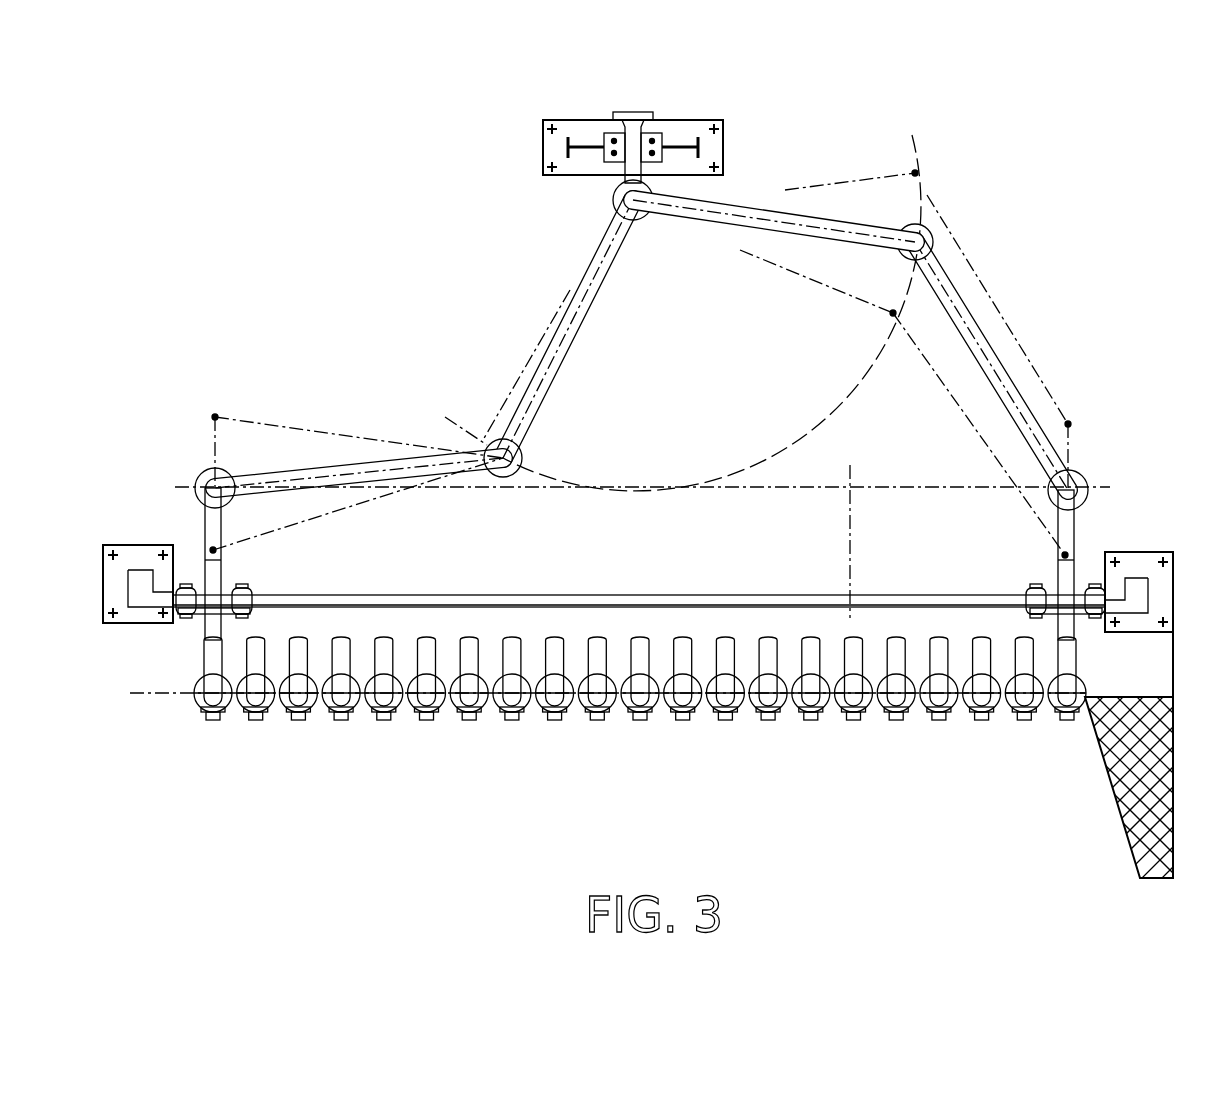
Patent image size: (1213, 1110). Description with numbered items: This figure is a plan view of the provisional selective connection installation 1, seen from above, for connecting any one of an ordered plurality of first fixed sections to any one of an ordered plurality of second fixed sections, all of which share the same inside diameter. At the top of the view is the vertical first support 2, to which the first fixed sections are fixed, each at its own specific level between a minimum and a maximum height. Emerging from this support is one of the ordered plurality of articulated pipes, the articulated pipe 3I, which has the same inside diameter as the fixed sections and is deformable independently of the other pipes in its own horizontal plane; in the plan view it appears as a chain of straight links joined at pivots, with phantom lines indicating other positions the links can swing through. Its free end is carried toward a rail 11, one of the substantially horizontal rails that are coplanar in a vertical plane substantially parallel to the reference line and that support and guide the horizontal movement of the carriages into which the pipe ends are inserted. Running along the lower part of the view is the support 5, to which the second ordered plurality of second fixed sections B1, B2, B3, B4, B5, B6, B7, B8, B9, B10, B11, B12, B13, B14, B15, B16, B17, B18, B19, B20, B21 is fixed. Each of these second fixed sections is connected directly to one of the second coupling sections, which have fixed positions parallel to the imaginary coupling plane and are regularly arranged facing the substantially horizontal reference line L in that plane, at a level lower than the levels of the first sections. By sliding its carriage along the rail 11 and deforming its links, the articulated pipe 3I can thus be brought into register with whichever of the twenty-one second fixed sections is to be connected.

The bale handling apparatus 1 is at (848, 114).
The vertical first support 2 is at (663, 150).
The articulated pipe 3I is at (764, 212).
The rail 11 is at (606, 594).
The support 5 is at (1160, 668).
The reference line L is at (138, 694).
The second fixed section B1 is at (213, 417).
The second fixed section B2 is at (256, 618).
The second fixed section B3 is at (298, 618).
The second fixed section B4 is at (341, 618).
The second fixed section B5 is at (384, 618).
The second fixed section B6 is at (426, 618).
The second fixed section B7 is at (469, 618).
The second fixed section B8 is at (512, 618).
The second fixed section B9 is at (555, 618).
The second fixed section B10 is at (597, 618).
The second fixed section B11 is at (640, 618).
The second fixed section B12 is at (683, 618).
The second fixed section B13 is at (725, 618).
The second fixed section B14 is at (768, 618).
The second fixed section B15 is at (811, 618).
The second fixed section B16 is at (854, 618).
The second fixed section B17 is at (896, 618).
The second fixed section B18 is at (939, 618).
The second fixed section B19 is at (982, 618).
The second fixed section B20 is at (1024, 618).
The second fixed section B21 is at (1067, 424).